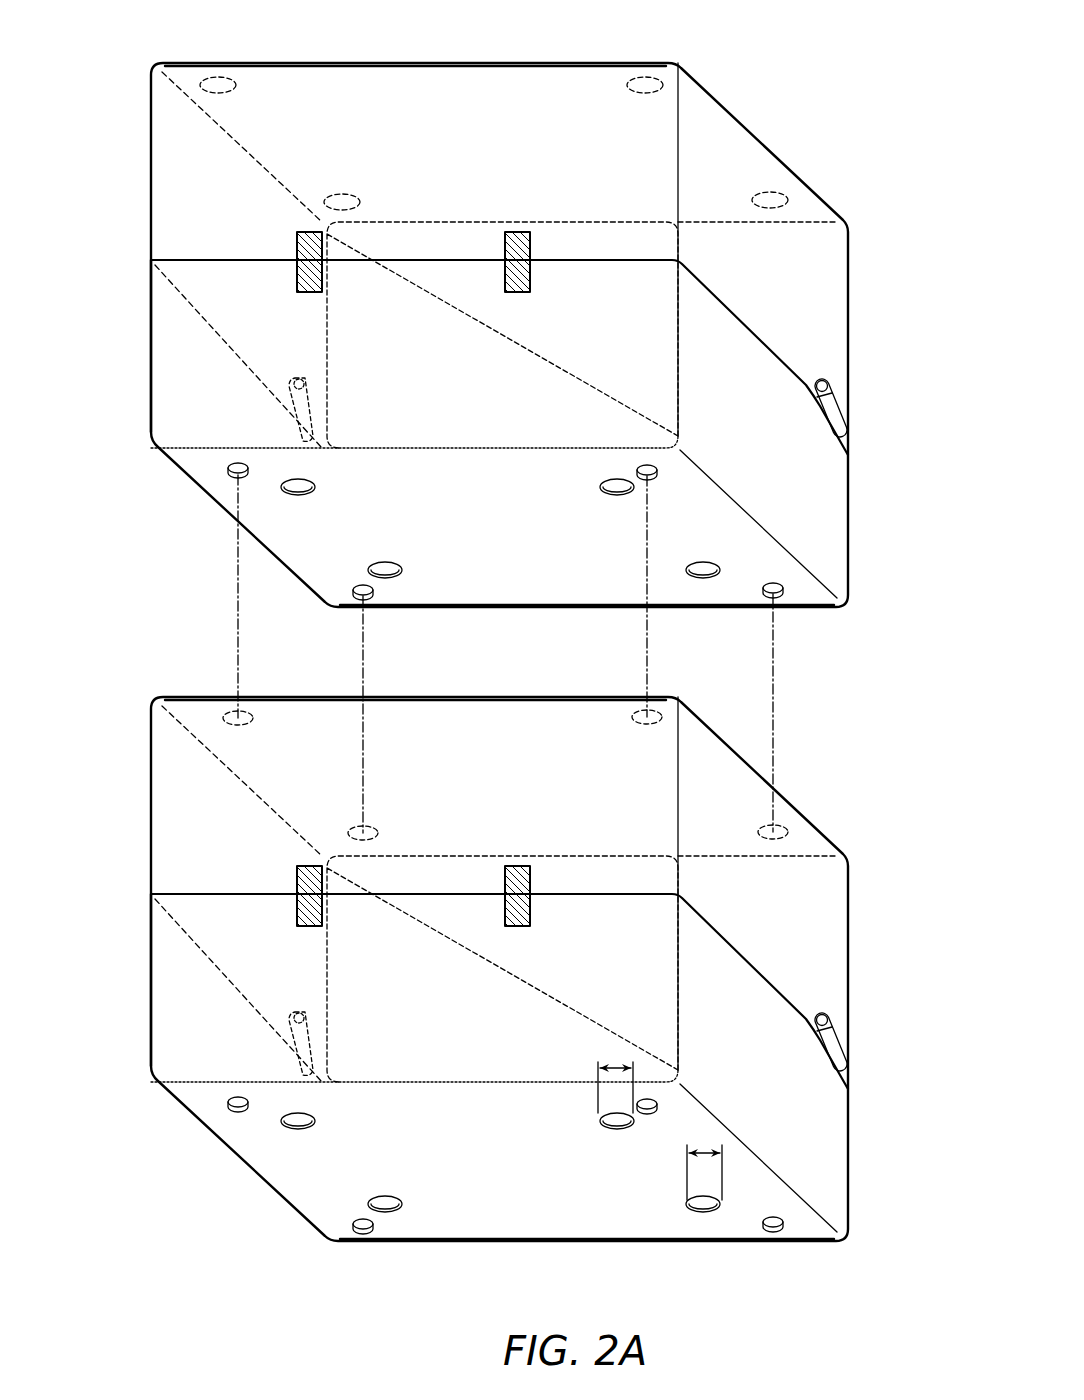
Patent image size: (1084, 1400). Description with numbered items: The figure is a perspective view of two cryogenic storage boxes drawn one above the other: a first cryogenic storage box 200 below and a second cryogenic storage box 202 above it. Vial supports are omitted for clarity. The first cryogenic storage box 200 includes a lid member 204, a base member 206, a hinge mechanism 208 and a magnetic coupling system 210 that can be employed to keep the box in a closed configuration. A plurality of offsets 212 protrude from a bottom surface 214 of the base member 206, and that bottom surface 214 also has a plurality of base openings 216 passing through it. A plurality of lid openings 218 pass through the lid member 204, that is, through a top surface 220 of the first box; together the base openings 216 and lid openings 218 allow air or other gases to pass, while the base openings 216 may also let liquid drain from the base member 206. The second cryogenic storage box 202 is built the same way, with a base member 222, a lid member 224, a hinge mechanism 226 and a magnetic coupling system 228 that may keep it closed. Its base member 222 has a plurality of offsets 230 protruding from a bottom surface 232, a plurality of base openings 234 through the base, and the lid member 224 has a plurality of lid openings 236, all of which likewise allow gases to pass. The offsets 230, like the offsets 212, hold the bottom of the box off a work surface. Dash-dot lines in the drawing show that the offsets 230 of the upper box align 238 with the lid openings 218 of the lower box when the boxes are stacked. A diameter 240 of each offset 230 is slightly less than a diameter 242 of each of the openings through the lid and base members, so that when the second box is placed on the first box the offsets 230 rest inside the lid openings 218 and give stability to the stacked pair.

The first cryogenic storage box 200 is at (108, 886).
The second cryogenic storage box 202 is at (108, 251).
The lid member 204 is at (464, 969).
The base member 206 is at (464, 991).
The hinge mechanism 208 is at (521, 1055).
The magnetic coupling system 210 is at (413, 952).
The offsets 212 is at (505, 1205).
The bottom surface 214 is at (643, 1205).
The base openings 216 is at (472, 1210).
The lid openings 218 is at (503, 775).
The top surface 220 is at (379, 700).
The base member 222 is at (150, 337).
The lid member 224 is at (150, 118).
The hinge mechanism 226 is at (282, 407).
The magnetic coupling system 228 is at (500, 280).
The offsets 230 is at (238, 477).
The bottom surface 232 is at (815, 643).
The base openings 234 is at (290, 500).
The lid openings 236 is at (344, 190).
The alignment 238 is at (363, 672).
The diameter of offset 240 is at (805, 1070).
The diameter of opening 242 is at (760, 1007).